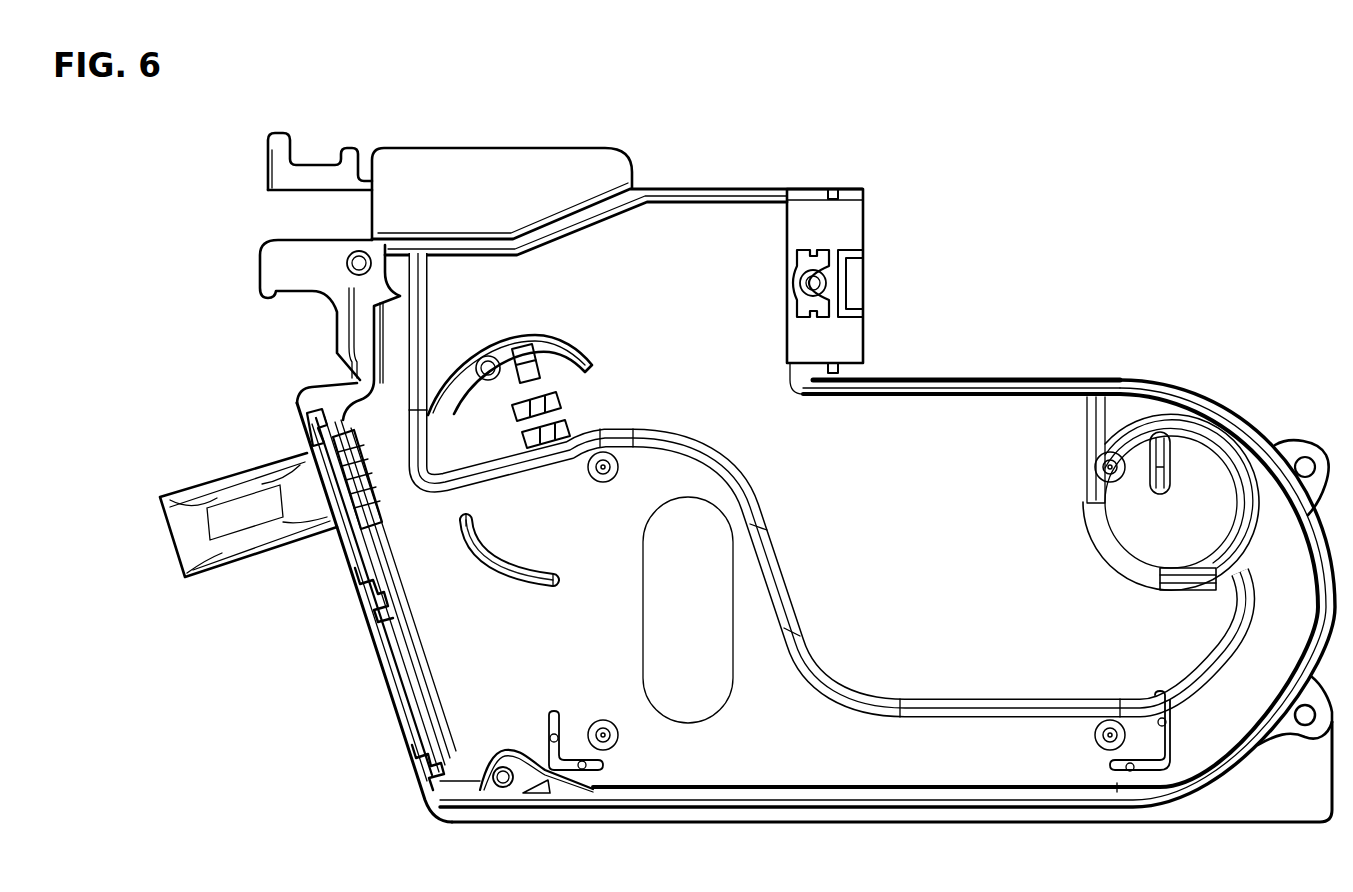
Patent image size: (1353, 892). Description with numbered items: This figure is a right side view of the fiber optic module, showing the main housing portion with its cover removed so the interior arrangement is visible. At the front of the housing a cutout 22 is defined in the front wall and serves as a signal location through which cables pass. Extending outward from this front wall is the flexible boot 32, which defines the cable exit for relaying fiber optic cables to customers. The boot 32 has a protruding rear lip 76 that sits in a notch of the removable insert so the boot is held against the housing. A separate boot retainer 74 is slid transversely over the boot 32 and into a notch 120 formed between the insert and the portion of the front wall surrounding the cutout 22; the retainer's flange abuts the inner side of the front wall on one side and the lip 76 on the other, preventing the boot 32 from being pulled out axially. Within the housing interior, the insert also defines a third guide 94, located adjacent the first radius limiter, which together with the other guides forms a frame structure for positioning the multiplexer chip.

The cutout 22 is at (851, 228).
The flexible boot 32 is at (257, 537).
The boot retainer 74 is at (343, 480).
The rear lip 76 is at (398, 526).
The third guide 94 is at (1168, 473).
The notch 120 is at (307, 453).